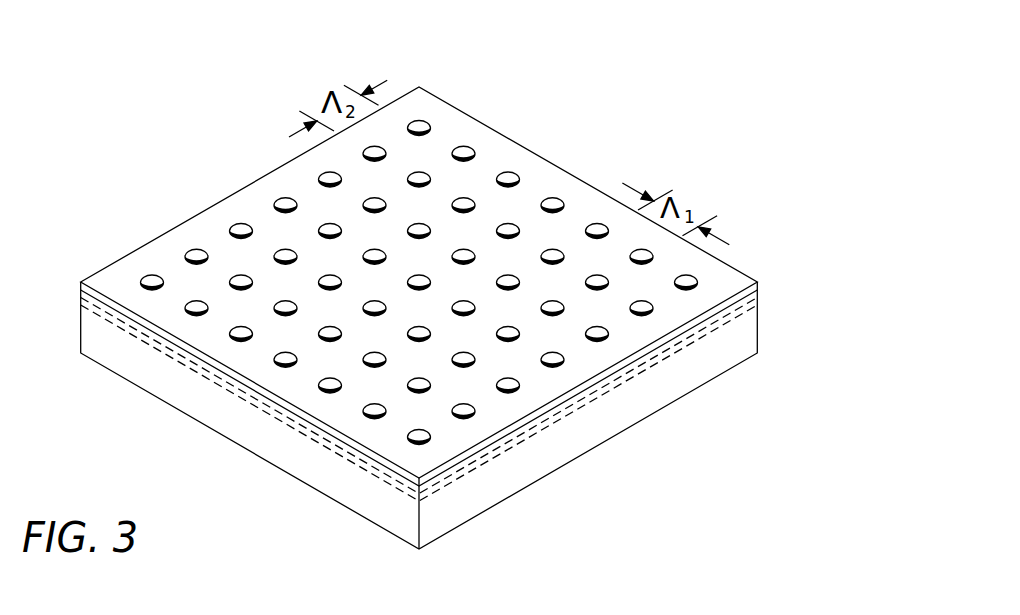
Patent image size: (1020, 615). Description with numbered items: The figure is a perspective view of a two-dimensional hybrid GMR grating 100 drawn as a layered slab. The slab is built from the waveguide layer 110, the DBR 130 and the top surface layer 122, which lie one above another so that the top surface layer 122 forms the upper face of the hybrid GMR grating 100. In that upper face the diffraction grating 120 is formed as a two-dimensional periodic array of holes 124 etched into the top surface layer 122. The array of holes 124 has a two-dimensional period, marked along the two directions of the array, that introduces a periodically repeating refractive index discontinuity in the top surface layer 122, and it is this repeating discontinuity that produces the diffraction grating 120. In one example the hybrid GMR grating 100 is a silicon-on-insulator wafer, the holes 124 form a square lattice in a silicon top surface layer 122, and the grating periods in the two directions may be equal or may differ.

The 2D hybrid GMR grating 100 is at (708, 57).
The waveguide layer 110 is at (752, 330).
The diffraction grating 120 is at (560, 125).
The top surface layer 122 is at (757, 287).
The holes 124 is at (513, 172).
The DBR 130 is at (757, 298).